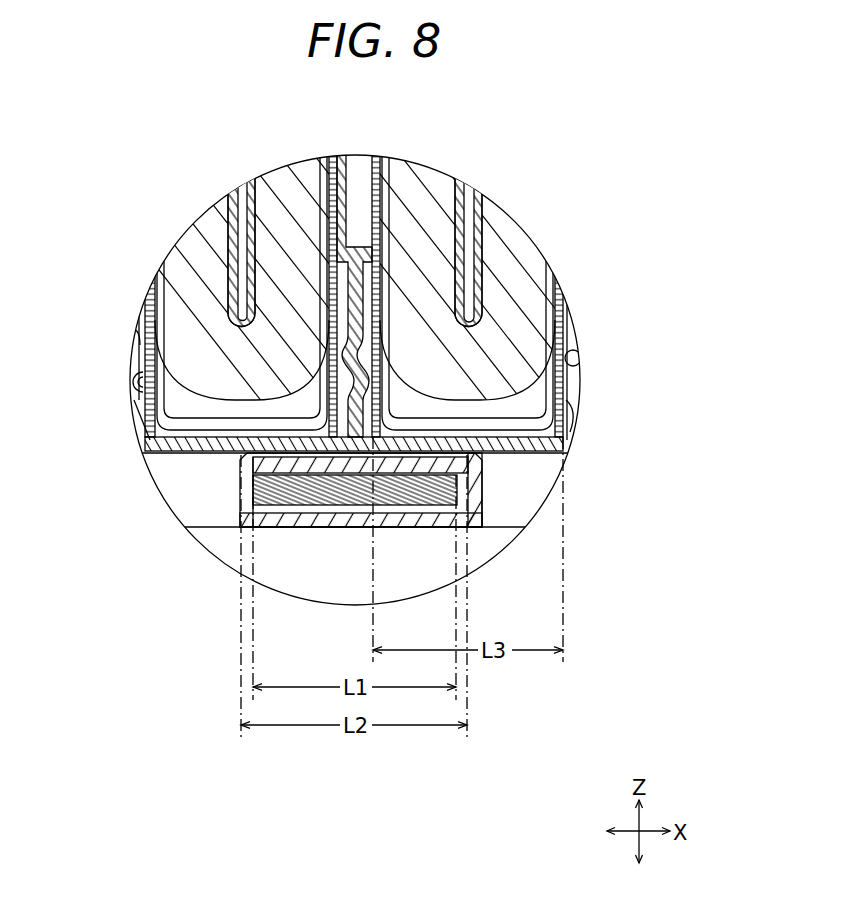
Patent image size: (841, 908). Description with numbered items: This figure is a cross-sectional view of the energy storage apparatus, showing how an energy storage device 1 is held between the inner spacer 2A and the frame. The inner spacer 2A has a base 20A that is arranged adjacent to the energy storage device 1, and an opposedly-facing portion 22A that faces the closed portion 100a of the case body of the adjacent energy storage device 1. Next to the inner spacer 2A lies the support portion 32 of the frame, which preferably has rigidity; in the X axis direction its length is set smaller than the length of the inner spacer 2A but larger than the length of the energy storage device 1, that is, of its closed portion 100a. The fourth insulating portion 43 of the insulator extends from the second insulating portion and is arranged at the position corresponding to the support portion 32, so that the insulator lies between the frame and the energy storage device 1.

The energy storage device 1 is at (163, 236).
The base 20A is at (431, 278).
The inner spacer 2A is at (355, 240).
The opposedly-facing portion 22A is at (258, 450).
The closed portion 100a is at (507, 436).
The fourth insulating portion 43 is at (243, 485).
The support portion 32 is at (258, 492).